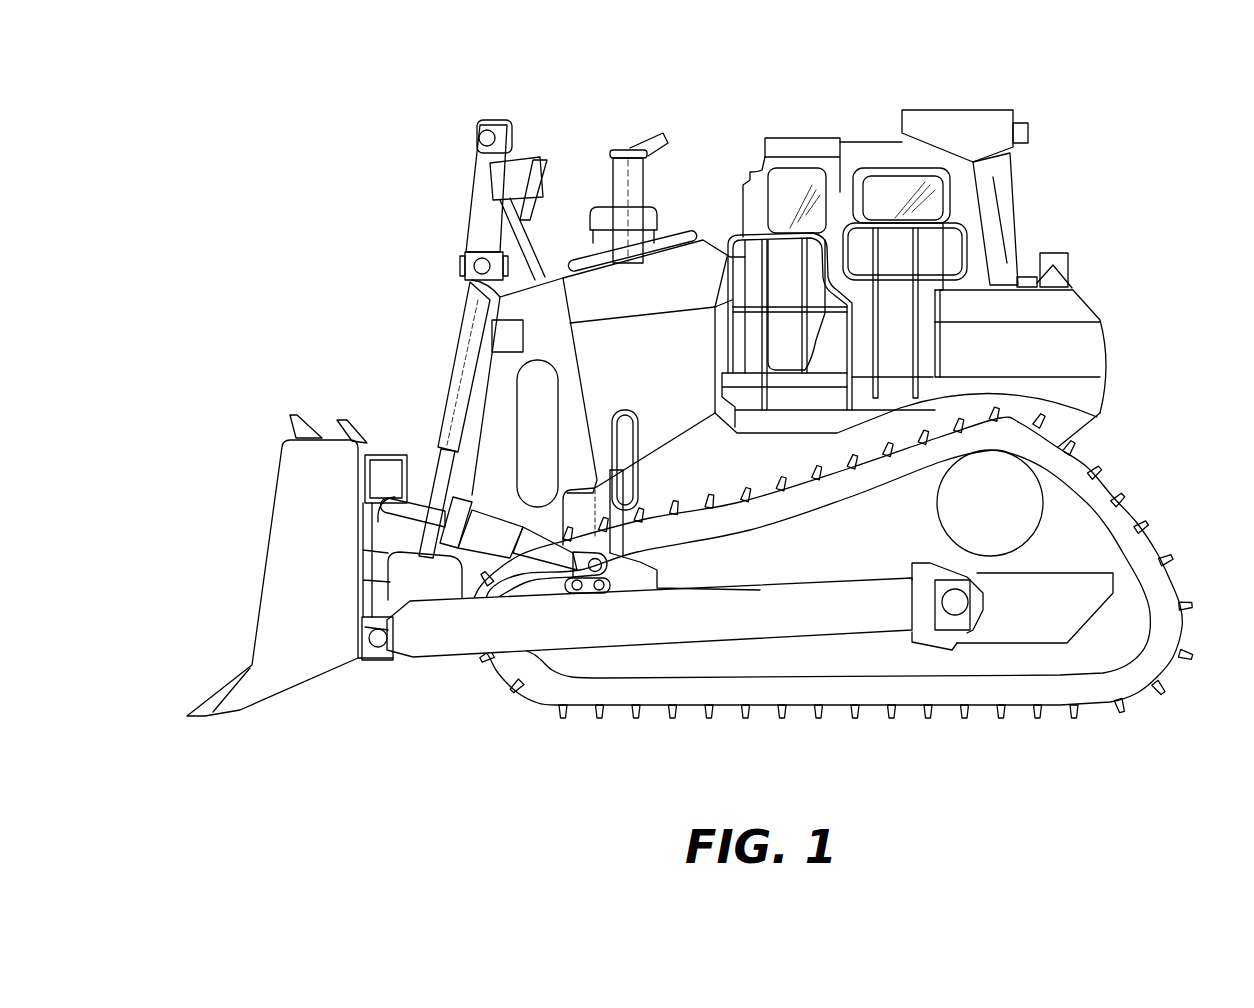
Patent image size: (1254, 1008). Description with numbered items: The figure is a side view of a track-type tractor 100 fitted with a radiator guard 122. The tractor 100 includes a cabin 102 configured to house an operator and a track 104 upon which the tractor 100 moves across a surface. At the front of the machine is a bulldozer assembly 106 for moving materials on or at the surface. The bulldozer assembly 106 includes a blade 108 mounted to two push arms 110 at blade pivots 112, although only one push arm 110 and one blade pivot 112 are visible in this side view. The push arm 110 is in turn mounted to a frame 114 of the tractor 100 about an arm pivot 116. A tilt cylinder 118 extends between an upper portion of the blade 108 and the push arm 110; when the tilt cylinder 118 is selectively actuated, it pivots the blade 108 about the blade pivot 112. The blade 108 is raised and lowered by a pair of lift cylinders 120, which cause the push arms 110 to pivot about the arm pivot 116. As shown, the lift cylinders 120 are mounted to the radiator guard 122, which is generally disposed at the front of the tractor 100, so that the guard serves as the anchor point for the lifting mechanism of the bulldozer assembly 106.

The tractor 100 is at (1107, 125).
The cabin 102 is at (860, 157).
The track 104 is at (1125, 690).
The bulldozer assembly 106 is at (286, 565).
The blade 108 is at (275, 590).
The push arm 110 is at (453, 643).
The blade pivot 112 is at (378, 640).
The frame 114 is at (1027, 622).
The arm pivot 116 is at (955, 612).
The tilt cylinder 118 is at (493, 545).
The lift cylinder 120 is at (452, 403).
The radiator guard 122 is at (495, 397).